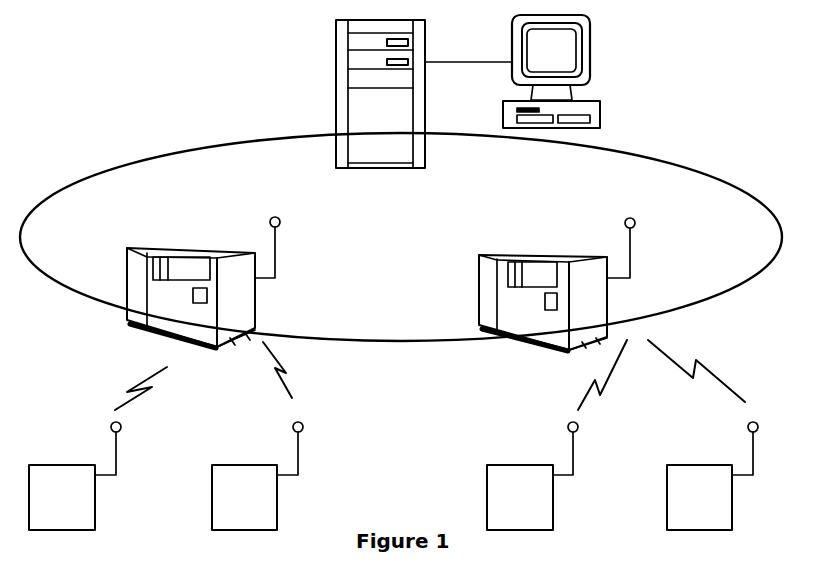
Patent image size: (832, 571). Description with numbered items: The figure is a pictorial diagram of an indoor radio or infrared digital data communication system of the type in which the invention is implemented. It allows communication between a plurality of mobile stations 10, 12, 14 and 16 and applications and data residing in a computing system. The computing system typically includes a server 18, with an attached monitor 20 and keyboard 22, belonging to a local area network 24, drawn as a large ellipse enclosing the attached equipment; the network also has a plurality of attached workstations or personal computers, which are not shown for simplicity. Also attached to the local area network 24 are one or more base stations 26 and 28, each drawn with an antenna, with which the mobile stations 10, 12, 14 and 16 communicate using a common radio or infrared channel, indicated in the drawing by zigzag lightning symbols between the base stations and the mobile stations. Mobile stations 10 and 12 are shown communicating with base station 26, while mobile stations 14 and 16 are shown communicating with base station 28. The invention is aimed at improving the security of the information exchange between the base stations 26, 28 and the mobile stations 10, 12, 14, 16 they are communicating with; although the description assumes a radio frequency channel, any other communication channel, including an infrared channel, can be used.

The mobile station 10 is at (88, 464).
The mobile station 12 is at (268, 464).
The mobile station 14 is at (545, 464).
The mobile station 16 is at (724, 464).
The server 18 is at (337, 44).
The monitor 20 is at (593, 44).
The keyboard 22 is at (600, 117).
The local area network 24 is at (758, 268).
The base station 26 is at (193, 248).
The base station 28 is at (560, 253).